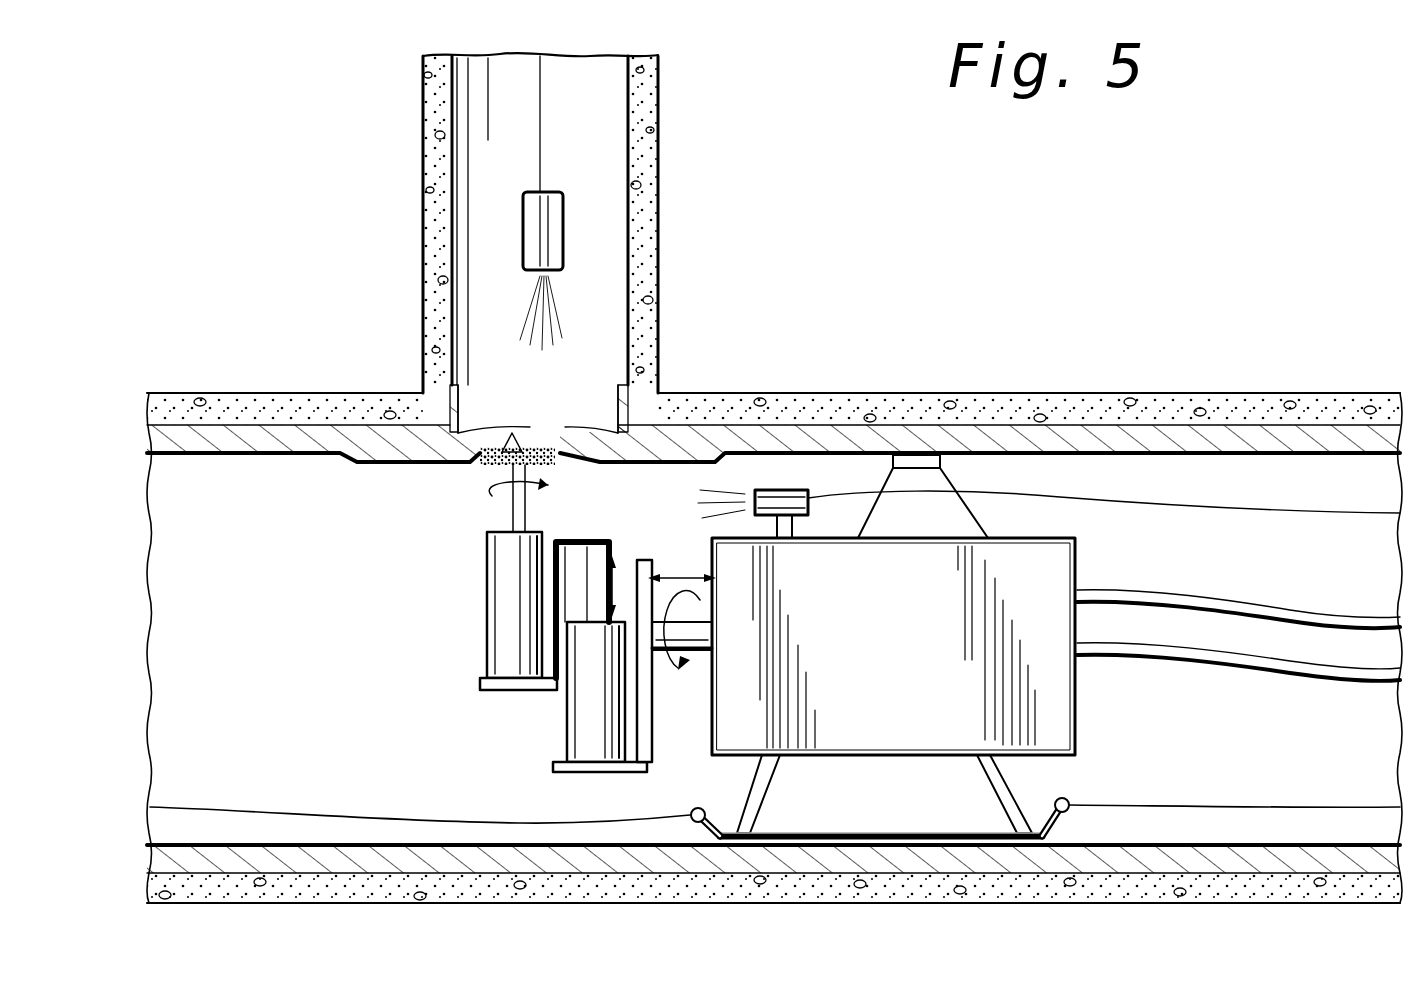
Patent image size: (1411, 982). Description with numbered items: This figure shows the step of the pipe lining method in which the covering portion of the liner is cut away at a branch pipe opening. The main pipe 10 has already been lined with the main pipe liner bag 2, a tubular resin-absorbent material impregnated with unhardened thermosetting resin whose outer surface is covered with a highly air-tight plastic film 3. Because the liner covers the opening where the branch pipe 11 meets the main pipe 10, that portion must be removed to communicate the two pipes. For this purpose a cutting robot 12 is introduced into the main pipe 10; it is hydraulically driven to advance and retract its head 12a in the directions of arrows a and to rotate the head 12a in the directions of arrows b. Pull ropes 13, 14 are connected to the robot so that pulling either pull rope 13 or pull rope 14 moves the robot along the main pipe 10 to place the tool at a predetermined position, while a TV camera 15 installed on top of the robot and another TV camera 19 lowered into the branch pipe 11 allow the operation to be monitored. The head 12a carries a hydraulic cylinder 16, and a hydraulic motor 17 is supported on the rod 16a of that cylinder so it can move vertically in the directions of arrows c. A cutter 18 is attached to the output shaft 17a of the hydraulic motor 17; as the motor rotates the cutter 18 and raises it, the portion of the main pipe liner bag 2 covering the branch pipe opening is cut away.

The main pipe liner bag 2 is at (283, 440).
The plastic film 3 is at (403, 843).
The main pipe 10 is at (1060, 393).
The branch pipe 11 is at (660, 262).
The cutting robot 12 is at (1077, 565).
The head 12a is at (700, 656).
The pull rope 13 is at (283, 807).
The pull rope 14 is at (1148, 807).
The TV camera 15 is at (777, 495).
The hydraulic cylinder 16 is at (582, 742).
The rod 16a is at (605, 552).
The hydraulic motor 17 is at (500, 630).
The output shaft 17a is at (508, 512).
The cutter 18 is at (540, 446).
The TV camera 19 is at (596, 243).